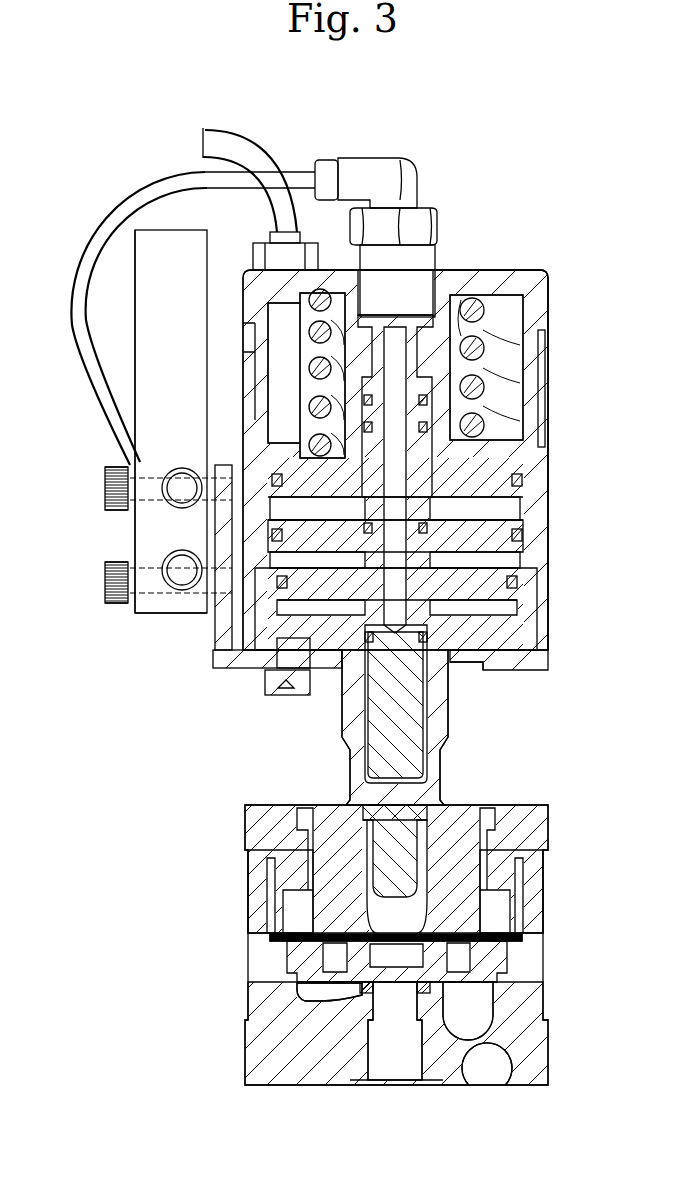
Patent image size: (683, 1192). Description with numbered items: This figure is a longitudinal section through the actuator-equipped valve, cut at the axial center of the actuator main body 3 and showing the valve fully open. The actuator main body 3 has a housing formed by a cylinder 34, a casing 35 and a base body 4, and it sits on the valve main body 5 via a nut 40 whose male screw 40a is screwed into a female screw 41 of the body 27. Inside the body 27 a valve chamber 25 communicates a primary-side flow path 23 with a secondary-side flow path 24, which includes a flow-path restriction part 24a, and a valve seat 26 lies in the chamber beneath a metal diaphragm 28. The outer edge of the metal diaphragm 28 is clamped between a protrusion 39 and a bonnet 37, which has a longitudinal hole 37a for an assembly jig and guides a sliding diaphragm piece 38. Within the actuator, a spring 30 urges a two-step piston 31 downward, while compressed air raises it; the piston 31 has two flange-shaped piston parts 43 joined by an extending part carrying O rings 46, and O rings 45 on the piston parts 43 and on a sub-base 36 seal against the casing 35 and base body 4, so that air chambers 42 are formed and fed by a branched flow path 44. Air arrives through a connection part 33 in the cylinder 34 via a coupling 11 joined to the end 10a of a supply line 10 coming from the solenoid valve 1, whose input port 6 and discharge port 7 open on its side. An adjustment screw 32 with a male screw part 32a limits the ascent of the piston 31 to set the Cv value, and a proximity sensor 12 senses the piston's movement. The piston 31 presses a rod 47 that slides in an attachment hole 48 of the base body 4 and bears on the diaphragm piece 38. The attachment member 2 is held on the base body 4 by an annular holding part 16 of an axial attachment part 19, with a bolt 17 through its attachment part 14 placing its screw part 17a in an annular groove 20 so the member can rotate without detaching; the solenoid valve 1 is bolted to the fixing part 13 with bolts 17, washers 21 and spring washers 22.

The solenoid valve 1 is at (135, 615).
The attachment member 2 is at (222, 655).
The actuator main body 3 is at (578, 248).
The base body 4 is at (465, 795).
The valve main body 5 is at (600, 826).
The input port 6 is at (135, 613).
The discharge port 7 is at (135, 471).
The supply line 10 is at (72, 257).
The another end of the supply line 10a is at (300, 165).
The coupling 11 is at (435, 228).
The proximity sensor 12 is at (290, 352).
The fixing part 13 is at (130, 655).
The attachment part 14 is at (272, 660).
The annular holding part 16 is at (470, 672).
The bolt 17 is at (105, 485).
The screw part 17a is at (286, 695).
The axial attachment part 19 is at (342, 705).
The annular groove 20 is at (515, 665).
The washer 21 is at (178, 470).
The spring washer 22 is at (128, 560).
The primary-side flow path 23 is at (400, 1060).
The secondary-side flow path 24 is at (487, 1070).
The flow-path restriction part 24a is at (530, 1060).
The valve chamber 25 is at (330, 1000).
The valve seat 26 is at (363, 993).
The body 27 is at (540, 1020).
The metal diaphragm 28 is at (300, 975).
The spring 30 is at (435, 385).
The piston 31 is at (548, 463).
The adjustment screw 32 is at (530, 328).
The male screw part 32a is at (548, 346).
The connection part 33 is at (486, 302).
The cylinder 34 is at (527, 268).
The casing 35 is at (540, 560).
The sub-base 36 is at (480, 530).
The bonnet 37 is at (500, 938).
The longitudinal hole 37a is at (290, 950).
The diaphragm piece 38 is at (490, 948).
The protrusion 39 is at (490, 978).
The nut 40 is at (262, 830).
The male screw 40a is at (520, 900).
The female screw 41 is at (272, 895).
The air chambers 42 is at (530, 505).
The piston parts 43 is at (250, 440).
The flow path 44 is at (548, 470).
The O ring 45 is at (522, 480).
The O rings 46 is at (430, 400).
The rod 47 is at (368, 795).
The attachment hole 48 is at (420, 760).